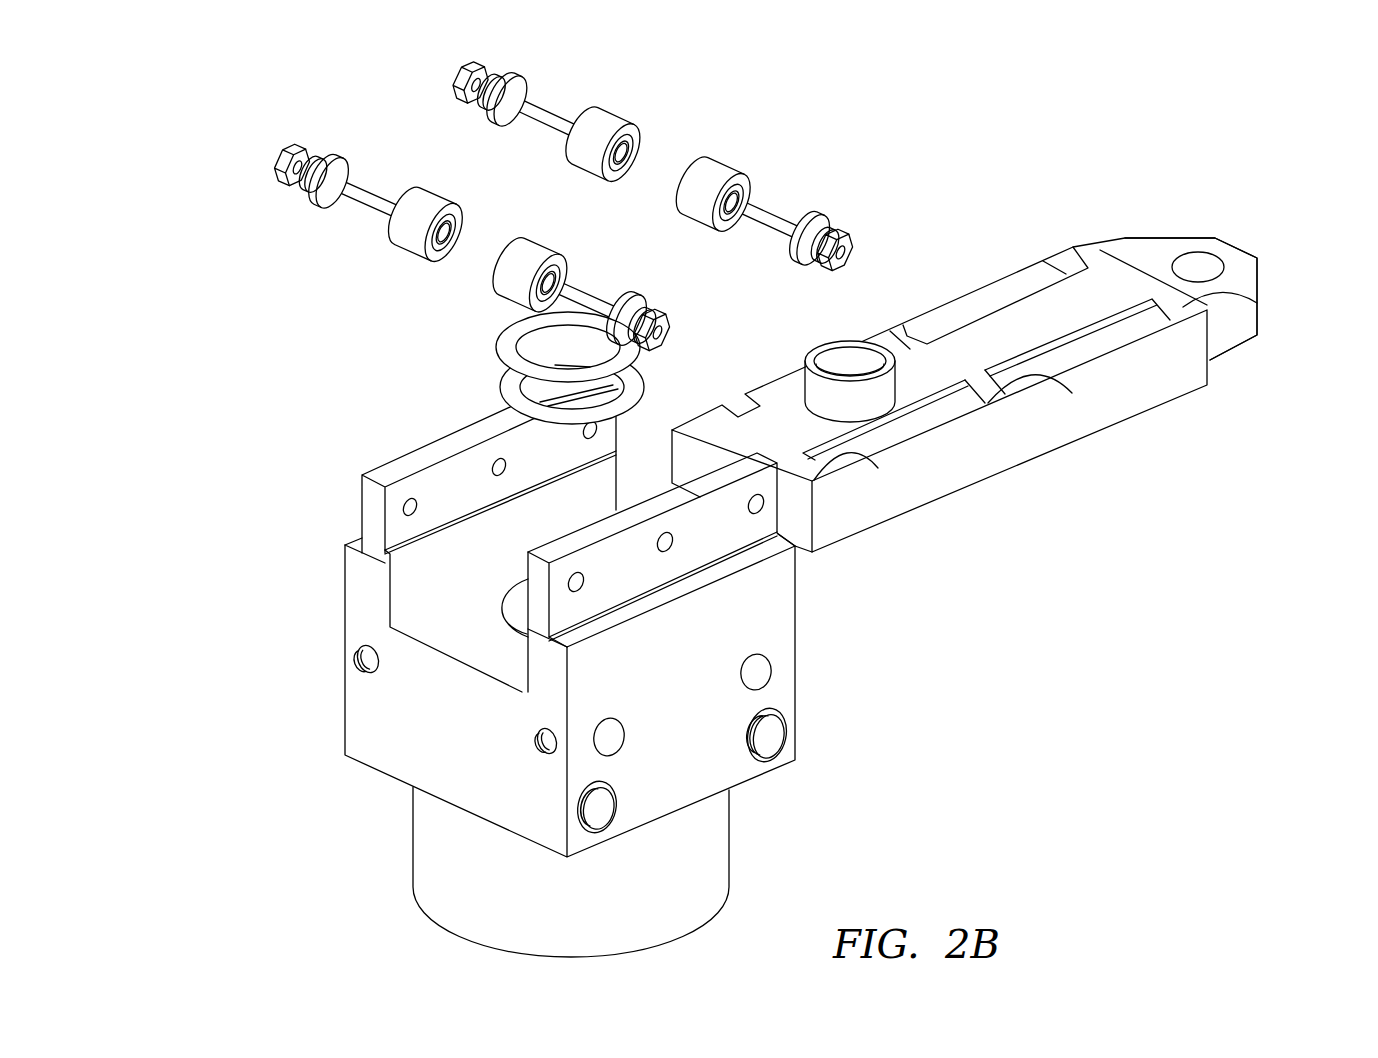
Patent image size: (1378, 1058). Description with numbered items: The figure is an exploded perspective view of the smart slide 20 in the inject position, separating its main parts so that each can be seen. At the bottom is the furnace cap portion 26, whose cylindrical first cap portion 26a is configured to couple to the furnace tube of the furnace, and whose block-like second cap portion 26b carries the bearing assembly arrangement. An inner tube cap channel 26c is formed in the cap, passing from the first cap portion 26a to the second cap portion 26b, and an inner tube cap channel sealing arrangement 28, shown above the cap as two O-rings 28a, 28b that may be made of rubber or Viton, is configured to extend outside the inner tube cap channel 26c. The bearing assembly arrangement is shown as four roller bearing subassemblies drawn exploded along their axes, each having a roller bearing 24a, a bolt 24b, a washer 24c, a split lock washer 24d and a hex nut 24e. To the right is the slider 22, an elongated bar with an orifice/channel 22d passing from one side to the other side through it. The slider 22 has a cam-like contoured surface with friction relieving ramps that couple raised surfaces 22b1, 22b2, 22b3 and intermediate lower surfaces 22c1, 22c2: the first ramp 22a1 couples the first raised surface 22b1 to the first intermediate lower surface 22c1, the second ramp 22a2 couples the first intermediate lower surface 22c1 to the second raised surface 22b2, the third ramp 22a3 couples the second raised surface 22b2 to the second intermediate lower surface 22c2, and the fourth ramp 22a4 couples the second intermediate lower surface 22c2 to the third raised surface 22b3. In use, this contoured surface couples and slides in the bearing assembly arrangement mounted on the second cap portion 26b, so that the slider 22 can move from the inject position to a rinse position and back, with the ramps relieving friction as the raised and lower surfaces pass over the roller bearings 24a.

The smart slide 20 is at (118, 198).
The slider 22 is at (1085, 233).
The first ramp 22a1 is at (1043, 261).
The second ramp 22a2 is at (905, 335).
The third ramp 22a3 is at (988, 403).
The fourth ramp 22a4 is at (873, 463).
The first raised surface 22b1 is at (1258, 305).
The second raised surface 22b2 is at (1032, 410).
The third raised surface 22b3 is at (832, 470).
The first intermediate lower surface 22c1 is at (1090, 352).
The second intermediate lower surface 22c2 is at (905, 430).
The orifice/channel 22d is at (808, 348).
The roller bearing 24a is at (618, 110).
The bolt 24b is at (400, 198).
The washer 24c is at (352, 168).
The split lock washer 24d is at (322, 162).
The hex nut 24e is at (272, 157).
The furnace cap portion 26 is at (292, 740).
The first cap portion 26a is at (428, 862).
The second cap portion 26b is at (343, 676).
The inner tube cap channel 26c is at (537, 590).
The inner tube cap channel sealing arrangement 28 is at (366, 316).
The O-ring 28a is at (500, 337).
The O-ring 28b is at (497, 385).